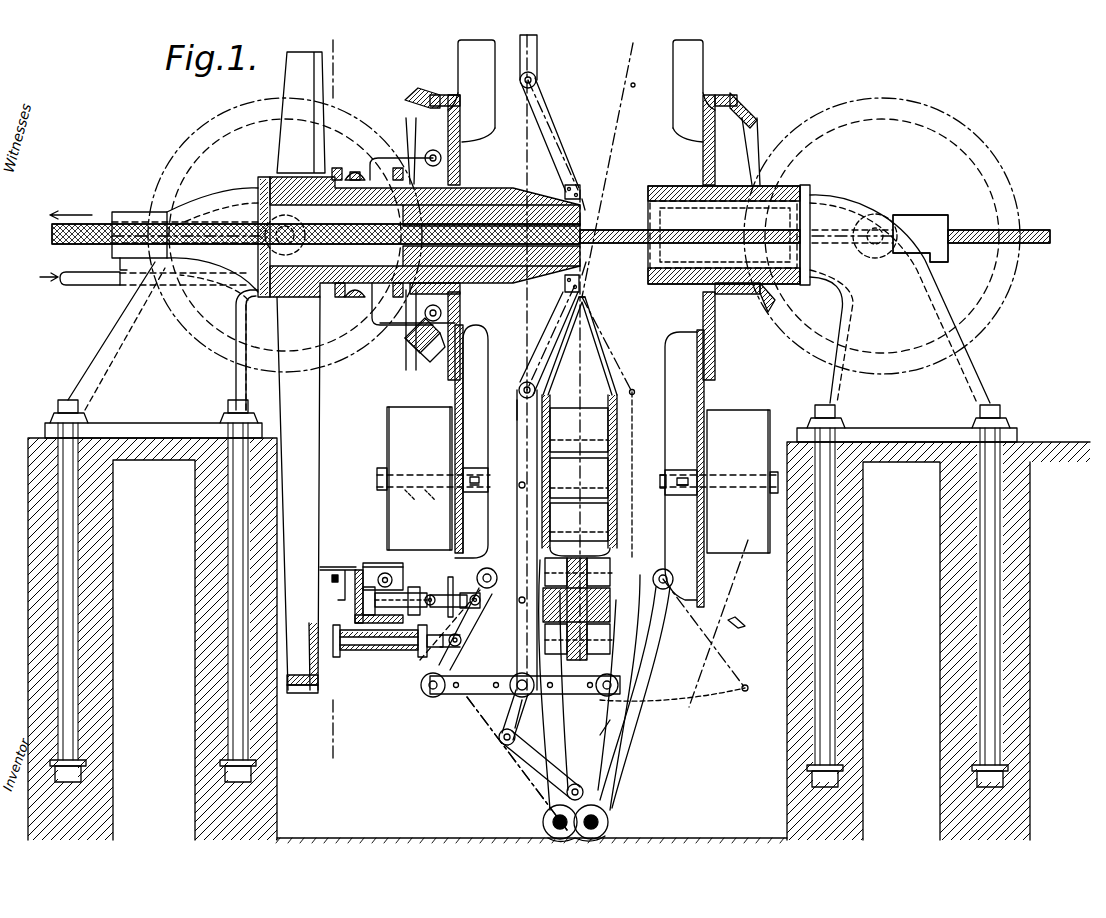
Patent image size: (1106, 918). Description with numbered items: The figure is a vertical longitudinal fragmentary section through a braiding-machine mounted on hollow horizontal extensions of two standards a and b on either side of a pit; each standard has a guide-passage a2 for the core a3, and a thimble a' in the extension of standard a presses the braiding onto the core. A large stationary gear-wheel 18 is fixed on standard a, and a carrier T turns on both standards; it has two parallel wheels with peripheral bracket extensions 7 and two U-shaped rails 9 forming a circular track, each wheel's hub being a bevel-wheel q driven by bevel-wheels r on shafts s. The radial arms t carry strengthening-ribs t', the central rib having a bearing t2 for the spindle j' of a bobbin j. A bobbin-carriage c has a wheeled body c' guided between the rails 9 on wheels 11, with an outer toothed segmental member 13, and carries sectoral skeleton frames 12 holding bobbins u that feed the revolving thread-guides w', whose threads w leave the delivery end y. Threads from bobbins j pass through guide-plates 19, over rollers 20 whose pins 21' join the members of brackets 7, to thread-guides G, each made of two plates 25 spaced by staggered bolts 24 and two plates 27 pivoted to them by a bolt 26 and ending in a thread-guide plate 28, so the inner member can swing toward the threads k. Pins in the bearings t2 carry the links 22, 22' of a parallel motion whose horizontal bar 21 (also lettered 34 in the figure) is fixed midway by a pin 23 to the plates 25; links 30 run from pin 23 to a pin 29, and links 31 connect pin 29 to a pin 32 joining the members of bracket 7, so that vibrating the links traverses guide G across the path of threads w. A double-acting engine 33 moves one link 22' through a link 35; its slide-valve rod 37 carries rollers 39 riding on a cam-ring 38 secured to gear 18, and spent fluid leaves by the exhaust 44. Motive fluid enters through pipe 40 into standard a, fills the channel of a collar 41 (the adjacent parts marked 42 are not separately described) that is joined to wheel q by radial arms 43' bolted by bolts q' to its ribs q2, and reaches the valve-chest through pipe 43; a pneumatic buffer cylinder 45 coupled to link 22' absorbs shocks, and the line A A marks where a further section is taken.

The peripheral bracket extension 7 is at (597, 729).
The rail 9 is at (576, 609).
The wheel 11 is at (545, 566).
The skeleton member 12 is at (545, 418).
The outer segmental member 13 is at (580, 660).
The gear-wheel 18 is at (300, 712).
The guide-plate 19 is at (738, 624).
The roller 20 is at (545, 815).
The horizontal bar 21 is at (512, 763).
The pin 21' is at (564, 826).
The link pin 22 is at (465, 651).
The link 22' is at (674, 623).
The pin 23 is at (532, 716).
The bolt 24 is at (518, 528).
The plate 25 is at (537, 58).
The bolt 26 is at (537, 80).
The plate 27 is at (550, 122).
The thread-guide plate 28 is at (582, 190).
The pin 29 is at (510, 745).
The link 30 is at (510, 725).
The link 31 is at (560, 758).
The pin 32 is at (583, 790).
The double-acting engine 33 is at (385, 657).
The bar 34 is at (430, 690).
The link 35 is at (448, 590).
The valve rod 37 is at (360, 563).
The cam-ring 38 is at (355, 590).
The roller 39 is at (335, 568).
The pipe 40 is at (95, 282).
The collar 41 is at (355, 172).
The bolts 42 is at (338, 168).
The pipe 43 is at (432, 436).
The radial arm 43' is at (392, 240).
The exhaust 44 is at (384, 572).
The buffer cylinder 45 is at (365, 657).
The section line A is at (339, 405).
The thread-guide G is at (517, 408).
The carrier T is at (470, 136).
The standard a is at (324, 293).
The thimble a' is at (560, 234).
The guide-passage a2 is at (932, 215).
The core a3 is at (725, 237).
The standard b is at (819, 294).
The bobbin-carriage c is at (592, 426).
The wheeled body c' is at (636, 688).
The bobbin j is at (578, 470).
The spindle j' is at (576, 505).
The thread k is at (485, 795).
The bevel-wheel q is at (592, 237).
The bolt q' is at (466, 239).
The radial rib q2 is at (582, 229).
The bevel-wheel r is at (180, 128).
The shaft s is at (268, 230).
The radial arm t is at (578, 296).
The strengthening-rib t' is at (542, 465).
The bearing t2 is at (580, 497).
The bobbin u is at (579, 474).
The thread w is at (603, 232).
The thread-guide w' is at (590, 343).
The delivery end y is at (610, 716).